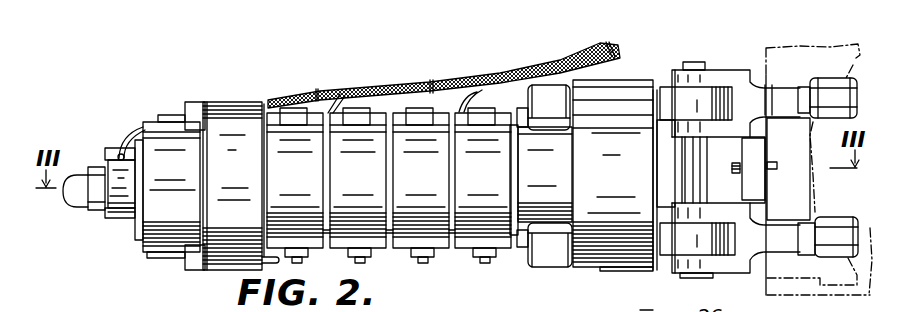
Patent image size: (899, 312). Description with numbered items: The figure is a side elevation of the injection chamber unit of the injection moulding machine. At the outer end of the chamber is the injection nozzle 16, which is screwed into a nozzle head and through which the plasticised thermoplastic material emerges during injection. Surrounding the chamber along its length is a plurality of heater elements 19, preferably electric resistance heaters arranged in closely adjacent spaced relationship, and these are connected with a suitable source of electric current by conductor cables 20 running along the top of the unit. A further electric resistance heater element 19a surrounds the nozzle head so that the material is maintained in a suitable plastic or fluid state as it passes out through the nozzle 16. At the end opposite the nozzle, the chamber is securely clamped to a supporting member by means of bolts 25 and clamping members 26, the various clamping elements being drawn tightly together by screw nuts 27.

The injection nozzle 16 is at (78, 182).
The heater elements 19 is at (183, 236).
The electric resistance heater element 19a is at (122, 224).
The conductor cables 20 is at (284, 100).
The bolts 25 is at (513, 74).
The clamping members 26 is at (722, 76).
The screw nuts 27 is at (842, 103).